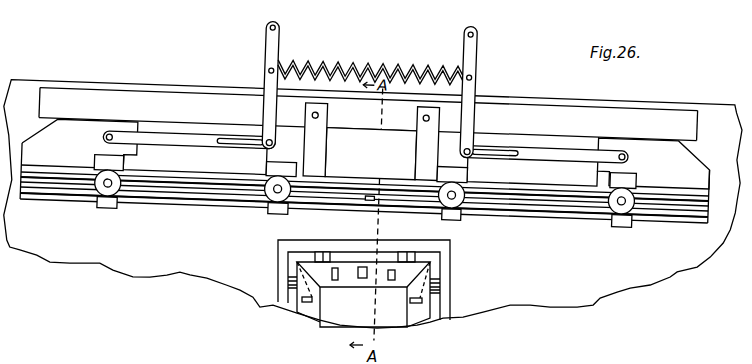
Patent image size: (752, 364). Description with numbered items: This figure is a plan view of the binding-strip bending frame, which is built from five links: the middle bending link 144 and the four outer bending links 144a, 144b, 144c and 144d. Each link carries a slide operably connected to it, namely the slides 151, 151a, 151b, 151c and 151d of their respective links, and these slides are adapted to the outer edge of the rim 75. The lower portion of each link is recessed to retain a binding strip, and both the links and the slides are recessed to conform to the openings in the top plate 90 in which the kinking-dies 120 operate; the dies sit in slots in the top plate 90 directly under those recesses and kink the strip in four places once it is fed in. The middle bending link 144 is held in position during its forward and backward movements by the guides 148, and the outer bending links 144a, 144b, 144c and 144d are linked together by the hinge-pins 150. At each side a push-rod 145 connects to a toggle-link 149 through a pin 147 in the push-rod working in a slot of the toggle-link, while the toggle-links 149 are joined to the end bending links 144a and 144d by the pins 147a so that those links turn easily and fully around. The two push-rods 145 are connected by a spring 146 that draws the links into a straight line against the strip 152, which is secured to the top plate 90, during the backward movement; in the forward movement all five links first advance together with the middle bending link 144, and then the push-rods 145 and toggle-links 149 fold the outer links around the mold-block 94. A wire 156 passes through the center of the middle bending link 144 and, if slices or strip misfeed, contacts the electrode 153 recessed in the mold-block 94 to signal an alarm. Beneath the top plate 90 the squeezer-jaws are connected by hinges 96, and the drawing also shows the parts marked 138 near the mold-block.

The strip 152 is at (696, 124).
The pins 147a is at (107, 139).
The toggle-links 149 is at (180, 146).
The pin 147 is at (255, 138).
The bending link 144d is at (79, 143).
The bending link 144c is at (195, 159).
The bending link 144b is at (532, 172).
The bending link 144a is at (654, 163).
The middle bending link 144 is at (371, 154).
The guides 148 is at (412, 117).
The push-rods 145 is at (275, 45).
The spring 146 is at (370, 64).
The wire 156 is at (374, 196).
The slide 151 is at (380, 206).
The slide 151a is at (688, 207).
The slide 151b is at (544, 206).
The slide 151c is at (183, 206).
The slide 151d is at (40, 203).
The hinge-pins 150 is at (91, 208).
The kinking-dies 120 is at (109, 214).
The top plate 90 is at (405, 280).
The lug 138 is at (277, 257).
The mold-block 94 is at (363, 294).
The electrode 153 is at (382, 289).
The hinges 96 is at (322, 248).
The rim 75 is at (445, 292).